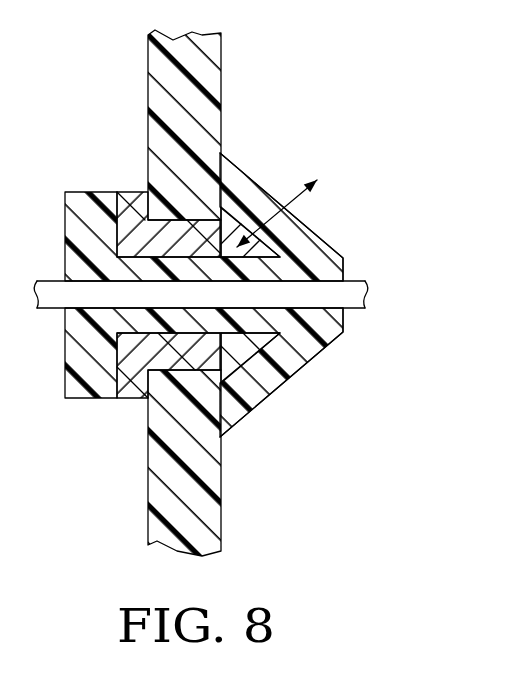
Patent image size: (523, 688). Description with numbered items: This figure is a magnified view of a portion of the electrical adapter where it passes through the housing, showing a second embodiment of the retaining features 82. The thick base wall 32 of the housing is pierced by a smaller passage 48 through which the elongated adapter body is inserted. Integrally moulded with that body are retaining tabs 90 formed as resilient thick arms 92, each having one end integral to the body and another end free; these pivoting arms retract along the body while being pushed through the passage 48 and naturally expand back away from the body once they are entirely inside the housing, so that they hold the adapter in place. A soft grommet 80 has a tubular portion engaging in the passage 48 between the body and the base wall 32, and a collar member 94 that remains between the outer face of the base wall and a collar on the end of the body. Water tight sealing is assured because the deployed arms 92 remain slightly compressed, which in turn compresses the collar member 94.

The base wall 32 is at (213, 507).
The smaller passage 48 is at (90, 485).
The grommet 80 is at (125, 133).
The retaining features 82 is at (363, 205).
The retaining tabs 90 is at (257, 187).
The resilient thick arms 92 is at (317, 410).
The collar member 94 is at (122, 198).